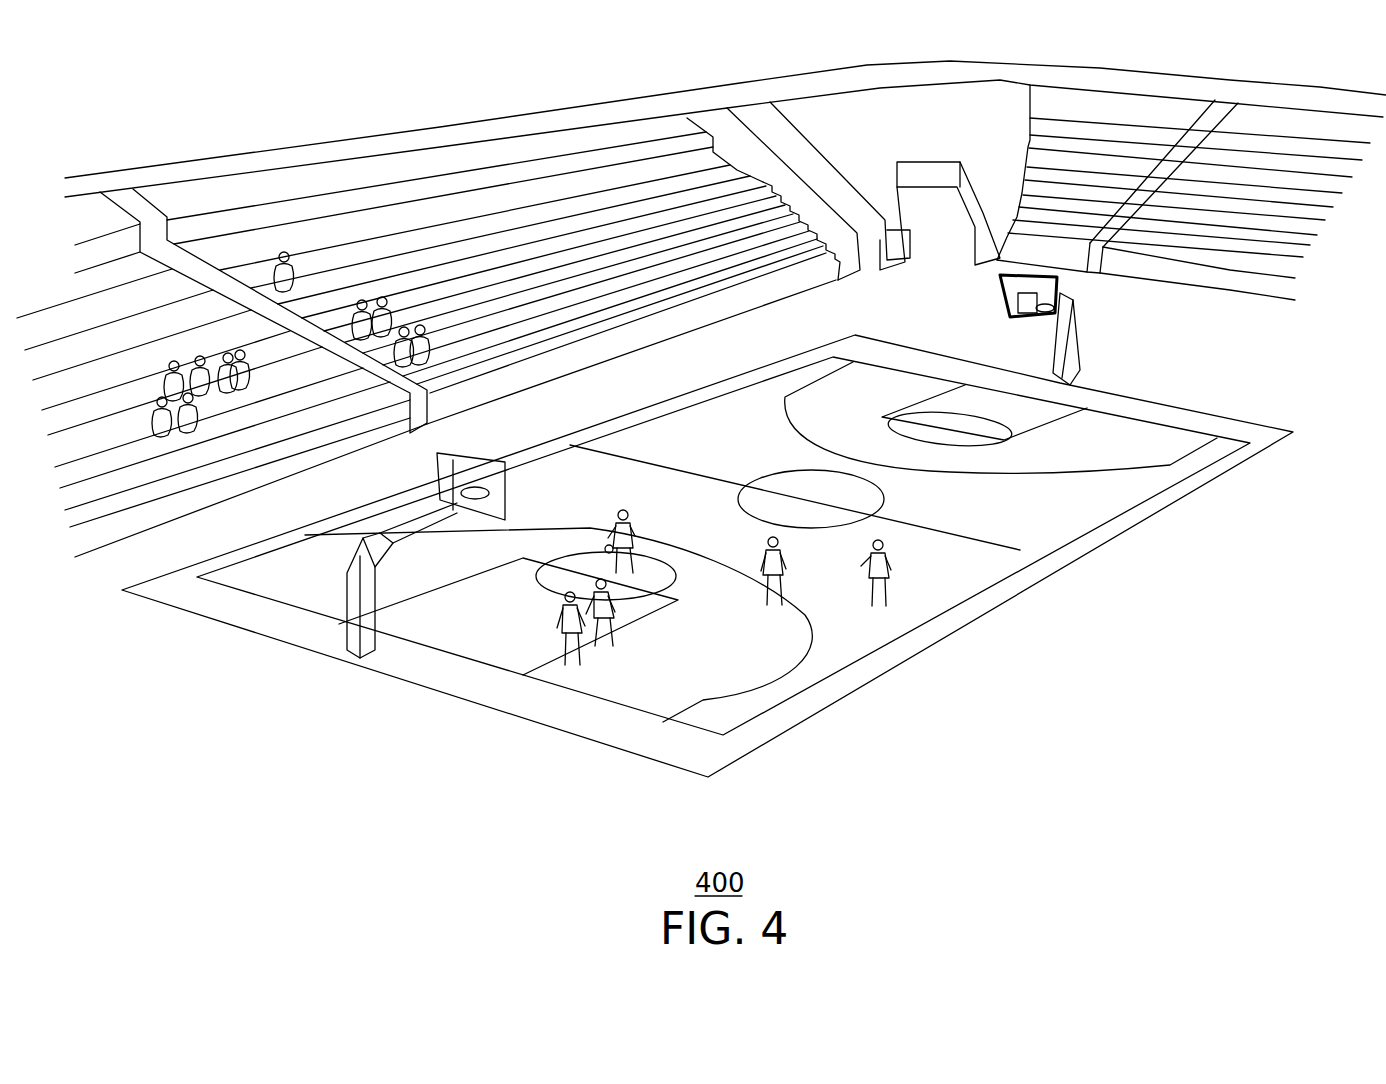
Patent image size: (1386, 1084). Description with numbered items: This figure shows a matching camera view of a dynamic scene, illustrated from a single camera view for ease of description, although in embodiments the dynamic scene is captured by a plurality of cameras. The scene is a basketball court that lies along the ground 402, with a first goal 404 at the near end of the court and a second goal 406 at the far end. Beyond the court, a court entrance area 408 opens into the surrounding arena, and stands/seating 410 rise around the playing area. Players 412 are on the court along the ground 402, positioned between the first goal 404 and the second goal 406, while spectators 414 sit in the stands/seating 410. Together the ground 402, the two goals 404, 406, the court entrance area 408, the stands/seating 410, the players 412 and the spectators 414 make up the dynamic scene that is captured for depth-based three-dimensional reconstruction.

The ground 402 is at (965, 578).
The first goal 404 is at (358, 652).
The second goal 406 is at (1078, 342).
The court entrance area 408 is at (944, 240).
The stands/seating 410 is at (324, 112).
The players 412 is at (653, 490).
The spectators 414 is at (408, 300).